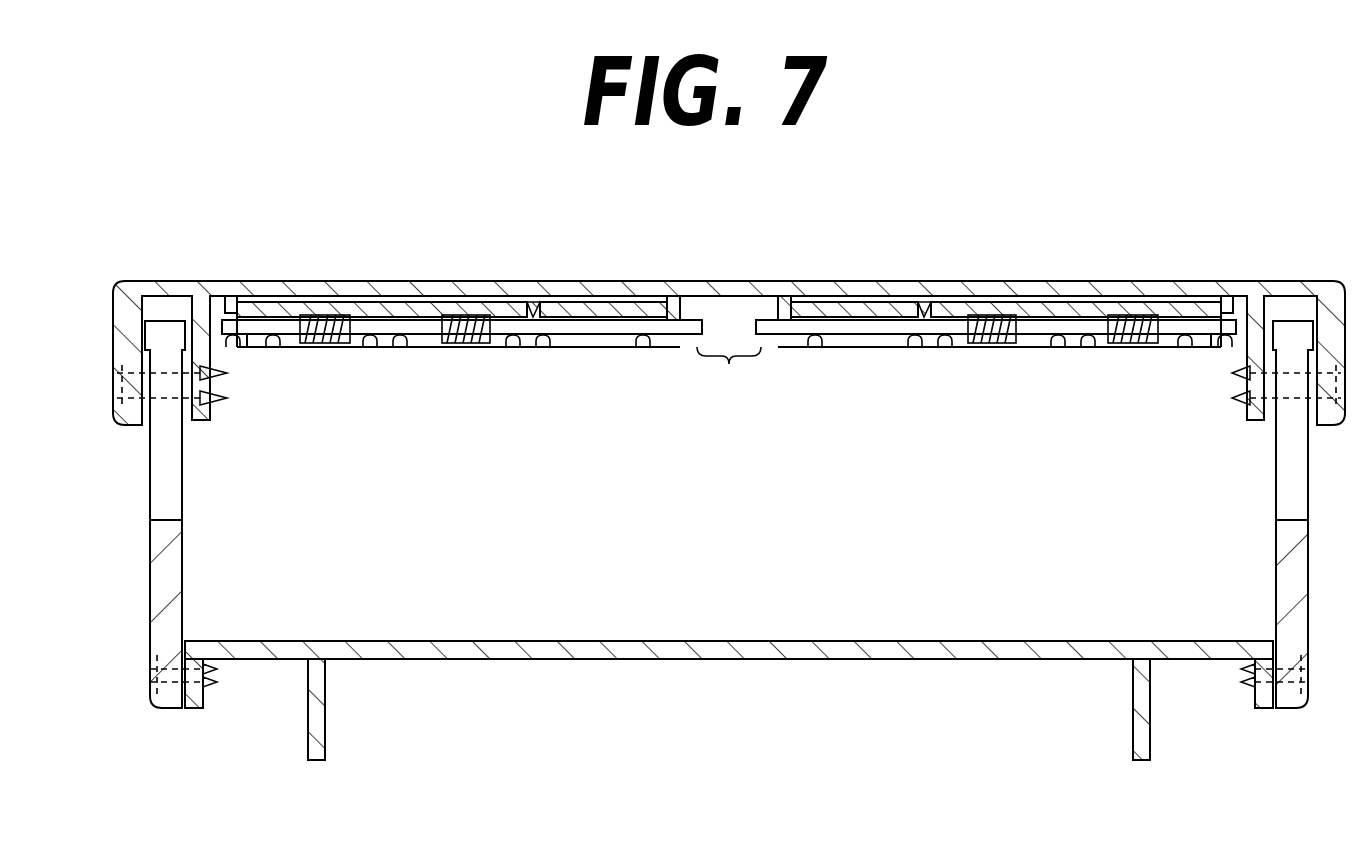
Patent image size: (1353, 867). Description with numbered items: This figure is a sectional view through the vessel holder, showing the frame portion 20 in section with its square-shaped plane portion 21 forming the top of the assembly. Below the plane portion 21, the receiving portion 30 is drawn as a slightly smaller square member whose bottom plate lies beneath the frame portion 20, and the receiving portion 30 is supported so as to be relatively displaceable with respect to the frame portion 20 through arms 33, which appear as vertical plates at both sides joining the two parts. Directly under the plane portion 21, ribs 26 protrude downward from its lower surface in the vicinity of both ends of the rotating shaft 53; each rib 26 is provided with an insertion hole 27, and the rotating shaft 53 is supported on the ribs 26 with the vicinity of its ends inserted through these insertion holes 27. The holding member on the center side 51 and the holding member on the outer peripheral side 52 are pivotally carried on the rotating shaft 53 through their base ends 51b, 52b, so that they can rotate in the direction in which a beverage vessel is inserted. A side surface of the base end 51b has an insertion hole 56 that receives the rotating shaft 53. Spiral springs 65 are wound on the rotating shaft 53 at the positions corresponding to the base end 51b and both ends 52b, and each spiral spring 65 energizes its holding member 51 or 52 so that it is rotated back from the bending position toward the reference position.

The frame portion 20 is at (702, 280).
The plane portion 21 is at (742, 281).
The rib 26 is at (235, 303).
The insertion hole 27 is at (238, 350).
The receiving portion 30 is at (716, 640).
The arm 33 is at (183, 493).
The holding member on the center side 51 is at (305, 350).
The base end of the holding member on the center side 51b is at (318, 300).
The holding member on the outer peripheral side 52 is at (440, 349).
The base end of the holding member on the outer peripheral side 52b is at (415, 302).
The rotating shaft 53 is at (729, 372).
The insertion hole 56 is at (280, 349).
The spiral spring 65 is at (333, 347).